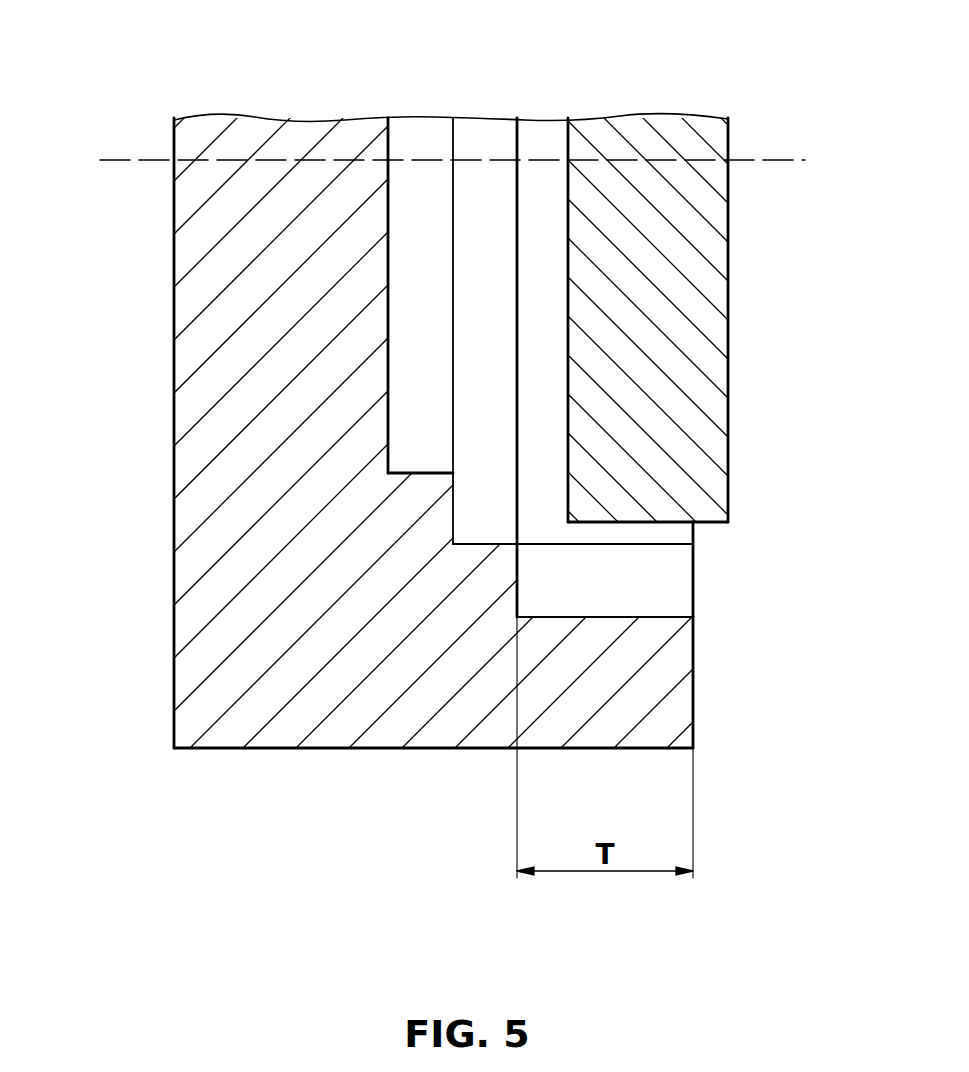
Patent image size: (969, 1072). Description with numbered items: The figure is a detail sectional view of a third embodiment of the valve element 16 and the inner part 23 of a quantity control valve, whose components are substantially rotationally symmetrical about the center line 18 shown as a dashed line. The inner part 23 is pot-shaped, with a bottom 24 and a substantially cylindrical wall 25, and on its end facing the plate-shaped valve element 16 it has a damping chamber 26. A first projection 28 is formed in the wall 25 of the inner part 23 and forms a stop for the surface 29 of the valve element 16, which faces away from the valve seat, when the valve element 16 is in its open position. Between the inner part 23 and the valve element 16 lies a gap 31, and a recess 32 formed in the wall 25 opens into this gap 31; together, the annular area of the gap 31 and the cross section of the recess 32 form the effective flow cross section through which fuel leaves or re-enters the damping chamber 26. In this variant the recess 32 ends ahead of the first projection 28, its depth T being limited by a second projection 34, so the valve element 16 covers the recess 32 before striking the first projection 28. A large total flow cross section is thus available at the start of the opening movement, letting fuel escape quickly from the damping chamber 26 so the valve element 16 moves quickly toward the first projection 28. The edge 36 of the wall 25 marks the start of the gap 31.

The valve element 16 is at (680, 323).
The center line 18 is at (131, 160).
The inner part 23 is at (150, 674).
The bottom 24 is at (327, 692).
The wall 25 is at (663, 677).
The damping chamber 26 is at (410, 415).
The first projection 28 is at (453, 503).
The surface 29 is at (568, 182).
The gap 31 is at (663, 534).
The recess 32 is at (663, 580).
The second projection 34 is at (518, 583).
The edge 36 is at (697, 710).